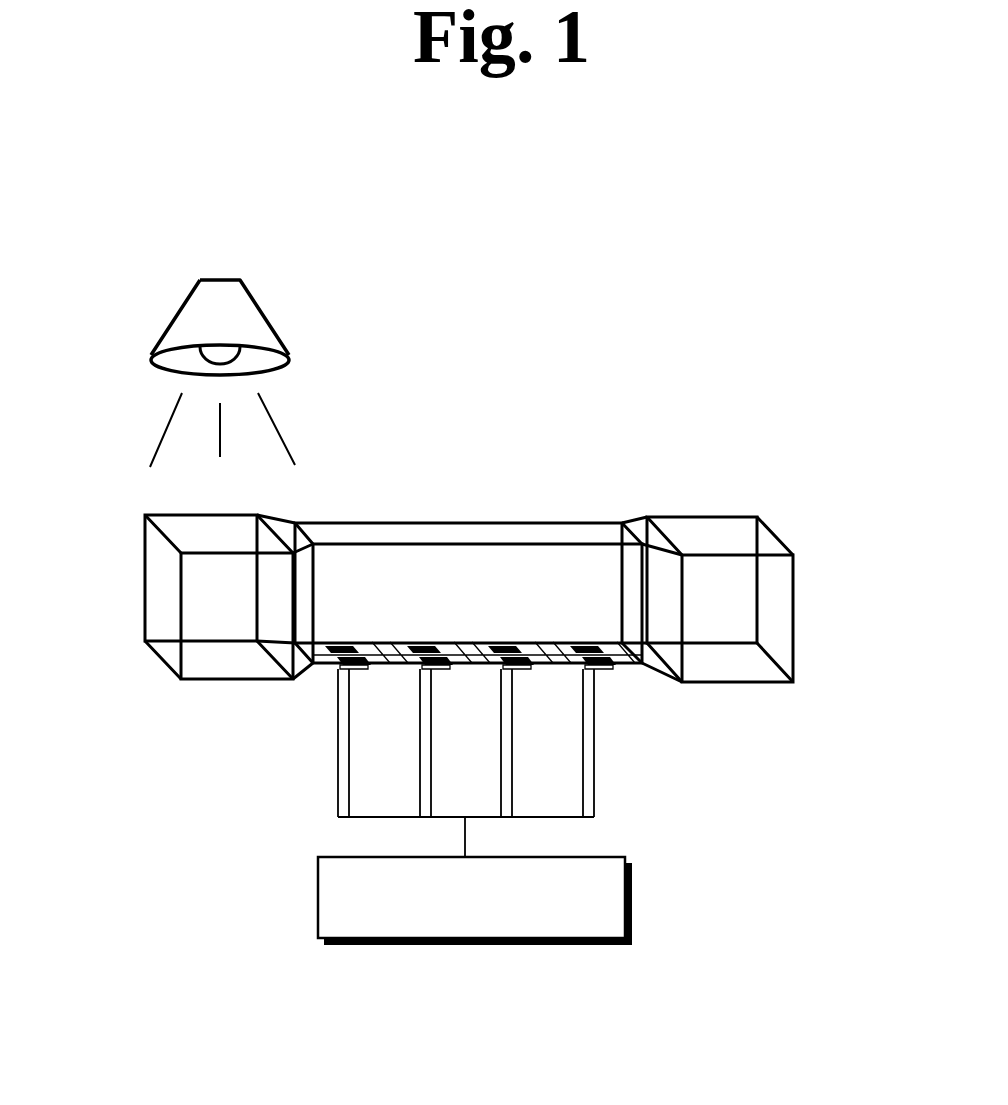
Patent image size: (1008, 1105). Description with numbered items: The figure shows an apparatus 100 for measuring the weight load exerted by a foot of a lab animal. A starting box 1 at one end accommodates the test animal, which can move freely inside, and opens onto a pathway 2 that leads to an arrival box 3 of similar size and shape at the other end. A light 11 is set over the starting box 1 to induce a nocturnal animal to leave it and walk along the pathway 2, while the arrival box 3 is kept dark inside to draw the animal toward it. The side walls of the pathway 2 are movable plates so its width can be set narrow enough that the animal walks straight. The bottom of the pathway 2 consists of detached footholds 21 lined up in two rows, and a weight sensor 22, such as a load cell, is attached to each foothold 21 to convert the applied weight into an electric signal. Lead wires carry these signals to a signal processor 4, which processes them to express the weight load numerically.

The apparatus 100 is at (650, 357).
The light 11 is at (263, 302).
The starting box 1 is at (140, 538).
The pathway 2 is at (436, 522).
The arrival box 3 is at (780, 533).
The footholds 21 is at (568, 668).
The weight sensor 22 is at (615, 666).
The signal processor 4 is at (633, 902).